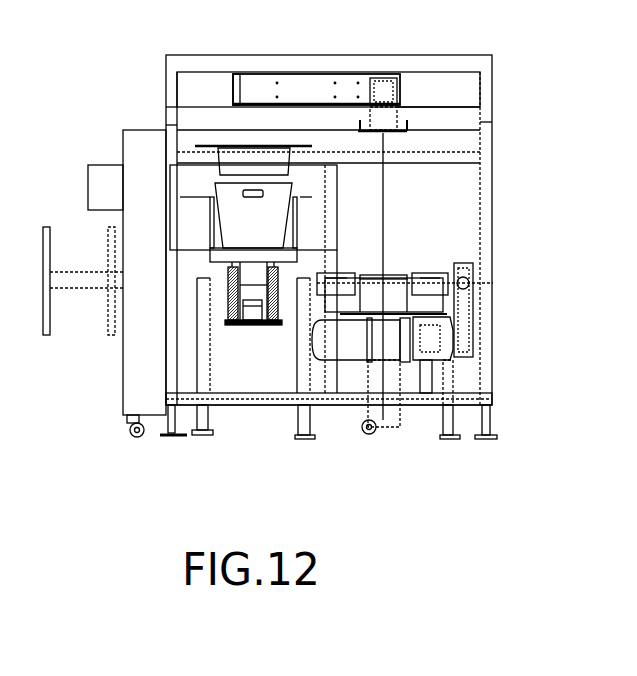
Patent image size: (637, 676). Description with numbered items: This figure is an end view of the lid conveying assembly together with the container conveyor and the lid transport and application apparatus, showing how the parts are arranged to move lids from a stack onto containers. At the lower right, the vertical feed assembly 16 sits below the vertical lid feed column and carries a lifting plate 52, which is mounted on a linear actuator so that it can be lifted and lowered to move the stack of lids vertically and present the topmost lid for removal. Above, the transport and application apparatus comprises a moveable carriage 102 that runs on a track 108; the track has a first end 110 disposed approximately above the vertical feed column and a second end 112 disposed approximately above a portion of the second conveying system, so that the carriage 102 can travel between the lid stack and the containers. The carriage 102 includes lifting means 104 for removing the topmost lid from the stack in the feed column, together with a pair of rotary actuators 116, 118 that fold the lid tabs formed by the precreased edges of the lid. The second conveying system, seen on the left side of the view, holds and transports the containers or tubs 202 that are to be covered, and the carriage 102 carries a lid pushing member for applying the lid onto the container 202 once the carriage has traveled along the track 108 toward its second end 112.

The second end 112 is at (255, 55).
The track 108 is at (340, 107).
The moveable carriage 102 is at (393, 90).
The first end 110 is at (400, 107).
The rotary actuator 116 is at (407, 123).
The rotary actuator 118 is at (363, 132).
The lifting means 104 is at (385, 135).
The container 202 is at (230, 218).
The lifting plate 52 is at (397, 273).
The vertical feed assembly 16 is at (403, 393).